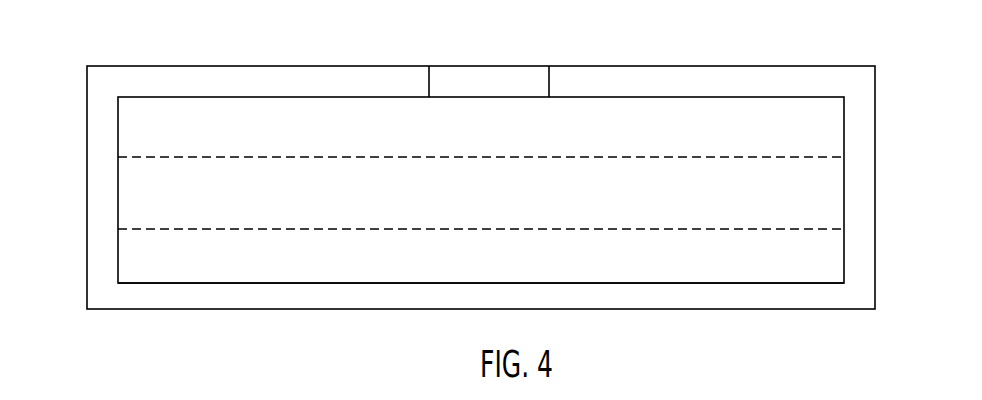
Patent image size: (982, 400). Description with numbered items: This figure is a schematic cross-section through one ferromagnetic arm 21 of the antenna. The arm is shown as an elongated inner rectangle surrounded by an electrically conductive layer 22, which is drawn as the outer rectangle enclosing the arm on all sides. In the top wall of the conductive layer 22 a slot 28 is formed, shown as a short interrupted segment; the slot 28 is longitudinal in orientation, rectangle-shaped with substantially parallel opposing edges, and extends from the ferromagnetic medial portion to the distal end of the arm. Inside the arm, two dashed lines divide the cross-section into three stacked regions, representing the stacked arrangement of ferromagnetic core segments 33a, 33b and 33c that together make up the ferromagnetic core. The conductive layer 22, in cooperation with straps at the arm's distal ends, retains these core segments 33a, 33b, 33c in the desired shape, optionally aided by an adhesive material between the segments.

The ferromagnetic arm 21 is at (835, 181).
The electrically conductive layer 22 is at (863, 85).
The slot 28 is at (502, 82).
The ferromagnetic core segment 33a is at (185, 125).
The ferromagnetic core segment 33b is at (147, 190).
The ferromagnetic core segment 33c is at (165, 253).